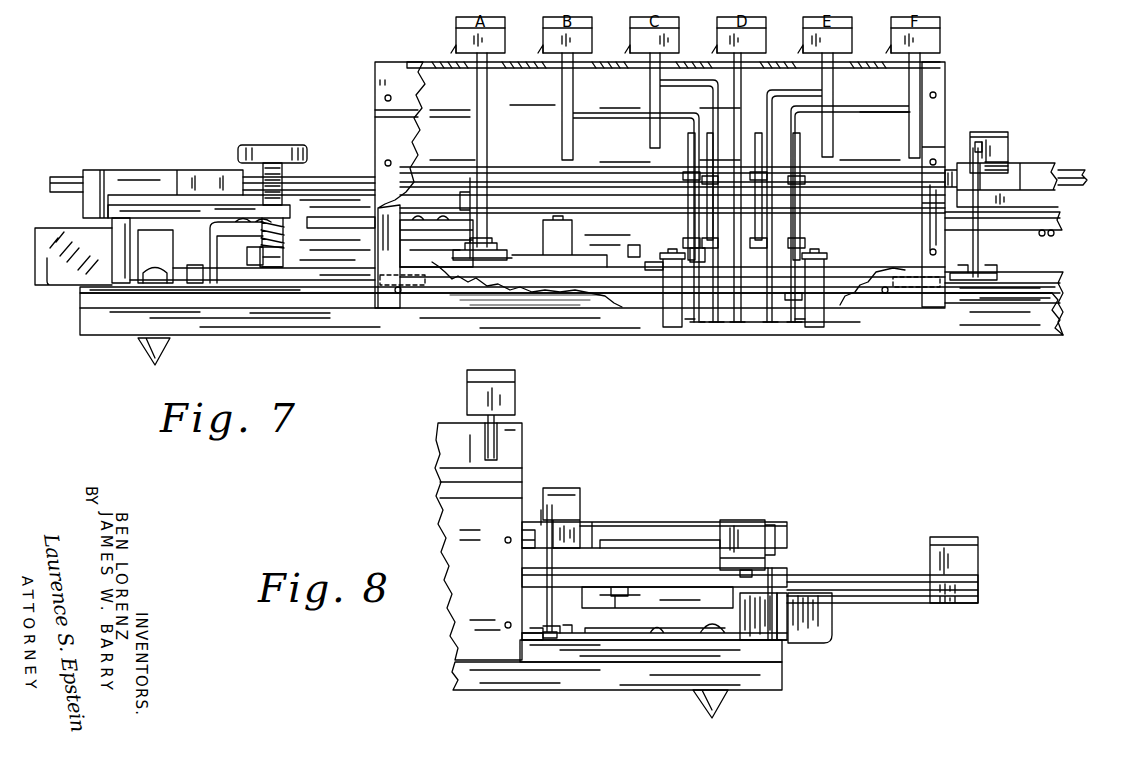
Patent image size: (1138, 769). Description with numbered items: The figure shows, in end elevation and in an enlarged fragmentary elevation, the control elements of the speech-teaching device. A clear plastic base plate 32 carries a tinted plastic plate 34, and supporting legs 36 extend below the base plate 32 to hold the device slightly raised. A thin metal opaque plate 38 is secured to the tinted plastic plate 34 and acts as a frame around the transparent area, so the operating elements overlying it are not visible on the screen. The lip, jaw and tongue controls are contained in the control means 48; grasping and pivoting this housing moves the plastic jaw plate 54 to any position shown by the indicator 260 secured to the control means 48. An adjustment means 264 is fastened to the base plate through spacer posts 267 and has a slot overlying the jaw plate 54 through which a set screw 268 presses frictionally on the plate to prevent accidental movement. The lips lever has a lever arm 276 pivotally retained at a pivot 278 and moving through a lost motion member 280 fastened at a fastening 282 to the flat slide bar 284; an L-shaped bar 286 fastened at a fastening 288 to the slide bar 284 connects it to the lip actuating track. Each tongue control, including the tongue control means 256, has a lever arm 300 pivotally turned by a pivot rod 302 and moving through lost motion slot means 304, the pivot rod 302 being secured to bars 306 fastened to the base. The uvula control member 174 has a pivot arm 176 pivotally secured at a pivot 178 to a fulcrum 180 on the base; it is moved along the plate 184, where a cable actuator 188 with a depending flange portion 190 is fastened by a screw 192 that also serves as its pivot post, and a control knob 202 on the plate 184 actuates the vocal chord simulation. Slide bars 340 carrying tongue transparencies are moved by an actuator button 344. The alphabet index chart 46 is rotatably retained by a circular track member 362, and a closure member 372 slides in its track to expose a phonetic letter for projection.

In FIG. 7, the base plate 32 is at (423, 323).
In FIG. 8, the base plate 32 is at (648, 675).
In FIG. 7, the tinted plastic plate 34 is at (115, 295).
In FIG. 8, the tinted plastic plate 34 is at (595, 650).
In FIG. 7, the supporting legs 36 is at (147, 355).
In FIG. 7, the opaque plate 38 is at (82, 290).
In FIG. 7, the index chart 46 is at (338, 177).
In FIG. 7, the control means 48 is at (938, 118).
In FIG. 8, the control means 48 is at (494, 570).
In FIG. 7, the jaw plate 54 is at (300, 270).
In FIG. 7, the uvula control member 174 is at (1000, 143).
In FIG. 8, the uvula control member 174 is at (575, 502).
In FIG. 7, the pivot arm 176 is at (980, 248).
In FIG. 8, the pivot arm 176 is at (545, 600).
In FIG. 8, the pivot 178 is at (575, 630).
In FIG. 7, the fulcrum 180 is at (977, 280).
In FIG. 8, the fulcrum 180 is at (540, 640).
In FIG. 7, the plate 184 is at (1050, 218).
In FIG. 8, the plate 184 is at (708, 530).
In FIG. 8, the cable actuator 188 is at (673, 588).
In FIG. 8, the flange portion 190 is at (785, 575).
In FIG. 7, the screw 192 is at (1054, 236).
In FIG. 8, the screw 192 is at (620, 590).
In FIG. 8, the control knob 202 is at (750, 522).
In FIG. 8, the tongue control means 256 is at (505, 380).
In FIG. 8, the indicator 260 is at (600, 545).
In FIG. 7, the adjustment means 264 is at (137, 205).
In FIG. 7, the spacer posts 267 is at (117, 243).
In FIG. 7, the set screw 268 is at (272, 147).
In FIG. 7, the lever arm 276 is at (489, 130).
In FIG. 7, the pivot 278 is at (487, 250).
In FIG. 7, the lost motion member 280 is at (460, 200).
In FIG. 7, the fastening 282 is at (445, 218).
In FIG. 7, the slide bar 284 is at (442, 235).
In FIG. 7, the L-shaped bar 286 is at (207, 250).
In FIG. 7, the fastening 288 is at (212, 230).
In FIG. 7, the lever arms 300 is at (600, 117).
In FIG. 7, the pivot rod 302 is at (653, 318).
In FIG. 7, the lost motion slot means 304 is at (682, 195).
In FIG. 7, the bars 306 is at (672, 285).
In FIG. 8, the slide bars 340 is at (885, 577).
In FIG. 8, the actuator button 344 is at (965, 550).
In FIG. 7, the circular track member 362 is at (150, 173).
In FIG. 8, the closure member 372 is at (827, 608).